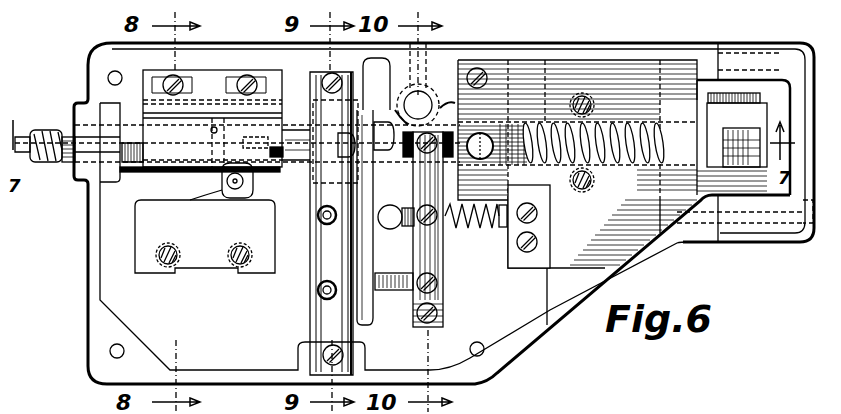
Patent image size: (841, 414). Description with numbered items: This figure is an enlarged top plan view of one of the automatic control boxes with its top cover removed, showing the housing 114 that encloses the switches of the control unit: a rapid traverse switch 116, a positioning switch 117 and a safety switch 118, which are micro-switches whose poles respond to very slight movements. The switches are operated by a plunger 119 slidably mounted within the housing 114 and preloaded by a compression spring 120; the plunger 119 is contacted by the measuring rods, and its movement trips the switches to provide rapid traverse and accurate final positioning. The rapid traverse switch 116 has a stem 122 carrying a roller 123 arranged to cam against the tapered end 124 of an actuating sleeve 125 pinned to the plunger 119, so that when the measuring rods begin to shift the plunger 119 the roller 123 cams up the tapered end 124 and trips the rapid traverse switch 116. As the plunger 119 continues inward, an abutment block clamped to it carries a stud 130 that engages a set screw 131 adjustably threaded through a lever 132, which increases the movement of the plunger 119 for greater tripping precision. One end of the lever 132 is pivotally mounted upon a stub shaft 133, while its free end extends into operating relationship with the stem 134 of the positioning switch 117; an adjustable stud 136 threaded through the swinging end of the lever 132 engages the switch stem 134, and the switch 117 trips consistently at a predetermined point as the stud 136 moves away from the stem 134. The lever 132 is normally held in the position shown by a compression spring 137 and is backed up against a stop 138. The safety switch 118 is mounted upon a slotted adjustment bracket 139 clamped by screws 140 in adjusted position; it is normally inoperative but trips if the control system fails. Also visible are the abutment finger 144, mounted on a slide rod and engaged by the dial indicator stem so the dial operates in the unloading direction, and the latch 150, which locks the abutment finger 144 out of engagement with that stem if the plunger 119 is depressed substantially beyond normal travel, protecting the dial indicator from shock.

The housing 114 is at (96, 247).
The rapid traverse switch 116 is at (213, 258).
The positioning switch 117 is at (368, 298).
The safety switch 118 is at (228, 122).
The plunger 119 is at (298, 164).
The compression spring 120 is at (628, 120).
The stem 122 is at (241, 200).
The roller 123 is at (208, 198).
The tapered end 124 is at (212, 133).
The actuating sleeve 125 is at (127, 176).
The stud 130 is at (335, 141).
The set screw 131 is at (384, 130).
The lever 132 is at (432, 261).
The stub shaft 133 is at (424, 100).
The stem 134 is at (375, 296).
The adjustable stud 136 is at (392, 273).
The compression spring 137 is at (470, 230).
The stop 138 is at (388, 207).
The slotted adjustment bracket 139 is at (203, 75).
The screws 140 is at (170, 78).
The abutment finger 144 is at (762, 100).
The latch 150 is at (484, 160).